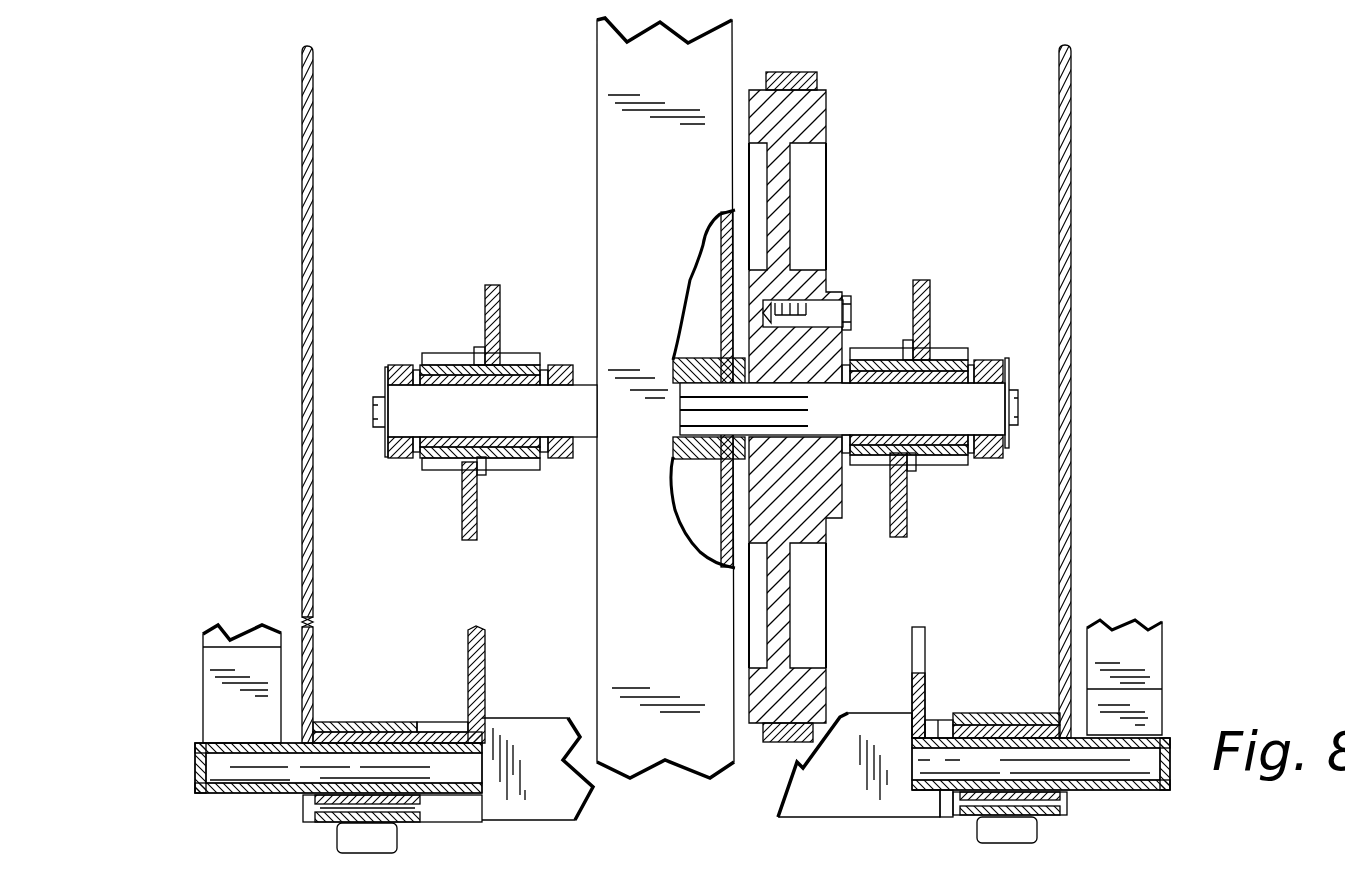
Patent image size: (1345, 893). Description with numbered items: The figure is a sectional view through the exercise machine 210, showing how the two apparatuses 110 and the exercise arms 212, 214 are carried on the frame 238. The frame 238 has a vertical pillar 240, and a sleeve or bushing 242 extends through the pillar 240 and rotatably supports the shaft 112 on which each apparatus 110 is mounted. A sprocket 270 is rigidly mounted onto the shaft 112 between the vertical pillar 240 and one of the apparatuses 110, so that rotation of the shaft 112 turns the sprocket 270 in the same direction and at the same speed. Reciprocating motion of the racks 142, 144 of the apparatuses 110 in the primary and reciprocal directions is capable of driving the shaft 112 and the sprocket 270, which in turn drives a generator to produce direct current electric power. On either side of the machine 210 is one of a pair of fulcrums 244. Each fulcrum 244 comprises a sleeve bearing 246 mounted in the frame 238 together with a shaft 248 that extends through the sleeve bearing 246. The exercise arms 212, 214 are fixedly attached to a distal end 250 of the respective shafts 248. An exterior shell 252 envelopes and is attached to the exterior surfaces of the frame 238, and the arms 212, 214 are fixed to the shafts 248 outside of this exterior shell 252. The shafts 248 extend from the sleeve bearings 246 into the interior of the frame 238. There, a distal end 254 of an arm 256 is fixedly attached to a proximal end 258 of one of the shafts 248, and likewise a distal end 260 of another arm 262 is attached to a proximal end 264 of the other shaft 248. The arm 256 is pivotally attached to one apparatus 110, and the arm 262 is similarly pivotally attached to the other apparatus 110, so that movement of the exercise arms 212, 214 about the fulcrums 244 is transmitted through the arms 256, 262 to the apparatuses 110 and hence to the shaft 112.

The apparatus 110 is at (695, 379).
The shaft 112 is at (960, 407).
The rack 142 is at (500, 290).
The rack 144 is at (477, 495).
The exercise machine 210 is at (1172, 100).
The exercise arm 212 is at (205, 650).
The exercise arm 214 is at (1165, 646).
The frame 238 is at (535, 822).
The vertical pillar 240 is at (734, 30).
The sleeve or bushing 242 is at (676, 470).
The fulcrum 244 is at (297, 808).
The sleeve bearing 246 is at (348, 720).
The shaft 248 is at (437, 735).
The distal end 250 is at (230, 792).
The exterior shell 252 is at (313, 230).
The distal end 254 is at (912, 730).
The arm 256 is at (910, 672).
The proximal end 258 is at (945, 817).
The distal end 260 is at (483, 740).
The arm 262 is at (488, 671).
The proximal end 264 is at (425, 797).
The sprocket 270 is at (826, 130).